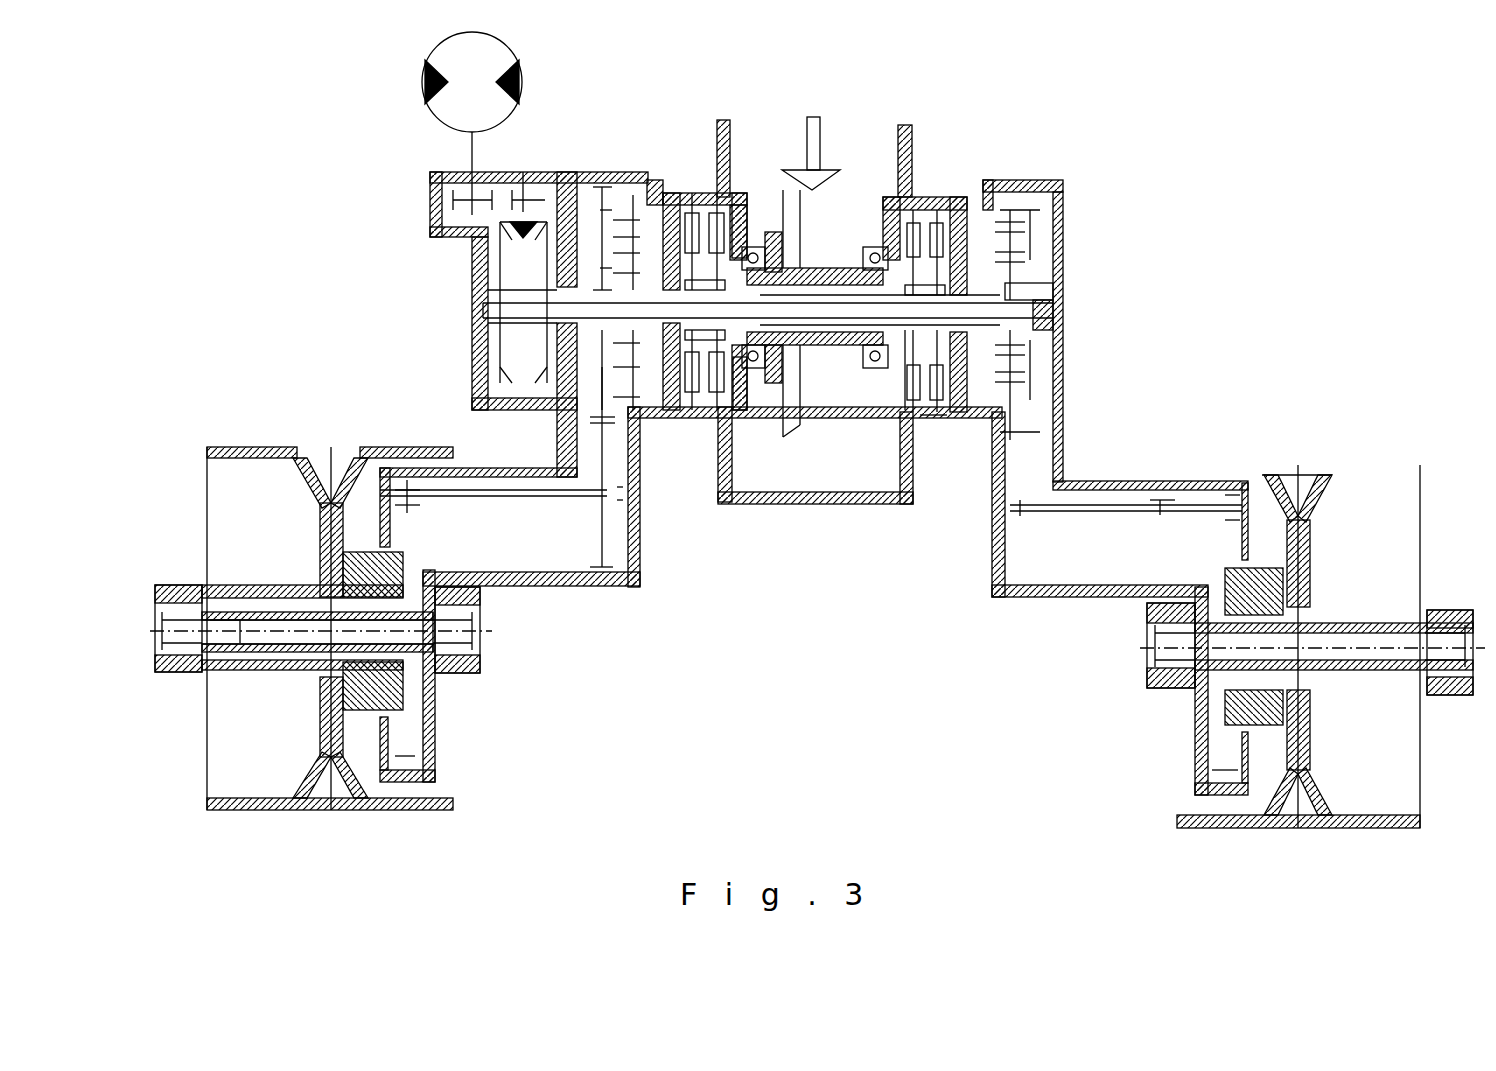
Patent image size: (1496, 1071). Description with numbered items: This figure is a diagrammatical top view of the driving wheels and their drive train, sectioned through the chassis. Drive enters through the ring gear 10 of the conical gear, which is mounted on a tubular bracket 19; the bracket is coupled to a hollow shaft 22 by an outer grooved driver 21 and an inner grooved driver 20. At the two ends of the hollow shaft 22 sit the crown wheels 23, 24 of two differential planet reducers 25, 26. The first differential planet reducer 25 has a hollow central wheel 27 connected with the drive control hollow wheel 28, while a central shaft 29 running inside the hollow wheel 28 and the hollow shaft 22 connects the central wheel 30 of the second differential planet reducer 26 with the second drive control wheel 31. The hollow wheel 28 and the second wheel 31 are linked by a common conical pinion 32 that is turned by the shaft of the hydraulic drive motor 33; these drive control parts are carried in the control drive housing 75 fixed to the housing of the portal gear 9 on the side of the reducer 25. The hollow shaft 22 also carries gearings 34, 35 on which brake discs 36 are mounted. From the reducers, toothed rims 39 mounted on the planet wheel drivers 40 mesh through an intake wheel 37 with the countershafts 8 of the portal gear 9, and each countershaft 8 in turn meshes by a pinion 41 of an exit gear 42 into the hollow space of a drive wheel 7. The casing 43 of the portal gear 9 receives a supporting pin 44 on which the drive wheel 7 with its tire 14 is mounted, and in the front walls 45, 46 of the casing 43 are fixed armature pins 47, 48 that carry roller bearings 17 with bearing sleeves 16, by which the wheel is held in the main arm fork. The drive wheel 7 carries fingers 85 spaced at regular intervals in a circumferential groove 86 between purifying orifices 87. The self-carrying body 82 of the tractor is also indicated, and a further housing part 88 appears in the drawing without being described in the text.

The hydraulic drive motor 33 is at (420, 74).
The conical pinion 32 is at (505, 230).
The drive control hollow wheel 28 is at (540, 262).
The second drive control wheel 31 is at (502, 278).
The control drive housing 75 is at (472, 348).
The crown wheel 24 is at (628, 207).
The differential planet reducer 25 is at (634, 197).
The hollow central wheel 27 is at (660, 260).
The brake discs 36 is at (700, 265).
The gearing 34 is at (746, 262).
The ring gear 10 is at (797, 432).
The tubular bracket 19 is at (840, 250).
The inner grooved driver 20 is at (858, 370).
The self-carrying body 82 is at (912, 142).
The crown wheel 23 is at (985, 262).
The hollow shaft 22 is at (930, 415).
The intake wheel 37 is at (1000, 500).
The outer grooved driver 21 is at (915, 412).
The differential planet reducer 26 is at (1048, 183).
The gearing 35 is at (985, 262).
The central wheel 30 is at (1067, 283).
The central shaft 29 is at (1047, 334).
The toothed rims 39 is at (1050, 397).
The planet wheel drivers 40 is at (1057, 357).
The casing 43 is at (680, 580).
The countershaft 8 is at (1085, 507).
The portal gear 9 is at (1125, 540).
The pinion 41 is at (1268, 478).
The supporting pin 44 is at (1357, 622).
The pulley housing 88 is at (190, 435).
The drive wheel 7 is at (360, 808).
The tire 14 is at (270, 808).
The front wall 45 is at (192, 587).
The roller bearings 17 is at (190, 548).
The armature pin 47 is at (180, 637).
The bearing sleeves 16 is at (197, 663).
The front wall 46 is at (447, 675).
The armature pin 48 is at (640, 575).
The exit gear 42 is at (1210, 745).
The groove 86 is at (1285, 817).
The fingers 85 is at (1302, 817).
The purifying orifices 87 is at (1323, 798).